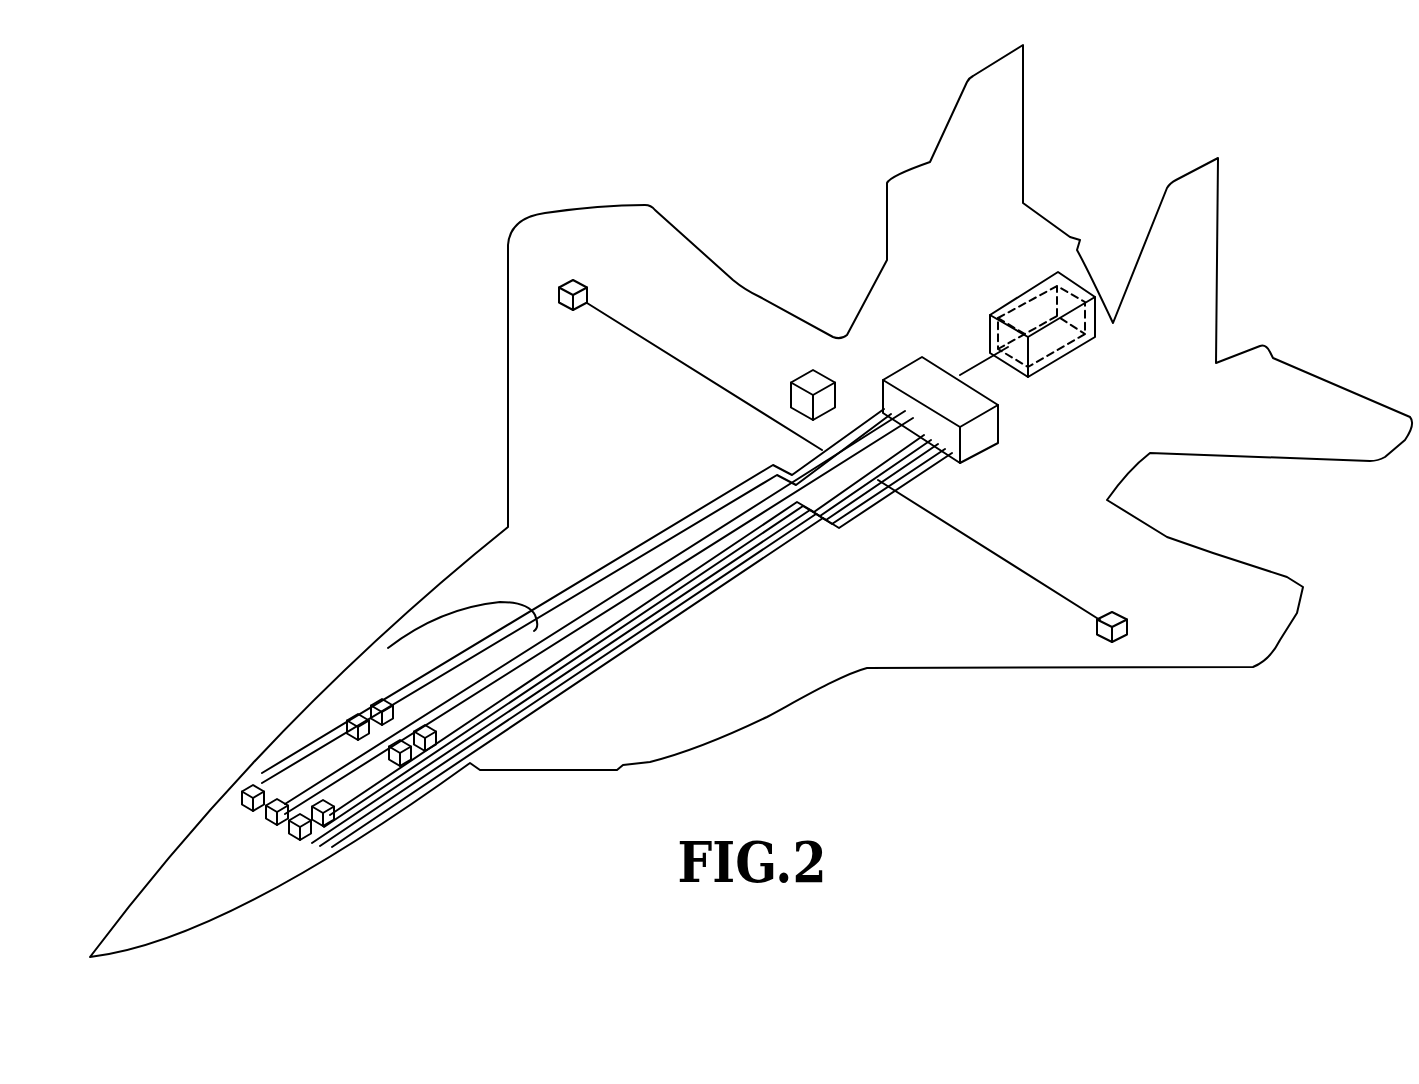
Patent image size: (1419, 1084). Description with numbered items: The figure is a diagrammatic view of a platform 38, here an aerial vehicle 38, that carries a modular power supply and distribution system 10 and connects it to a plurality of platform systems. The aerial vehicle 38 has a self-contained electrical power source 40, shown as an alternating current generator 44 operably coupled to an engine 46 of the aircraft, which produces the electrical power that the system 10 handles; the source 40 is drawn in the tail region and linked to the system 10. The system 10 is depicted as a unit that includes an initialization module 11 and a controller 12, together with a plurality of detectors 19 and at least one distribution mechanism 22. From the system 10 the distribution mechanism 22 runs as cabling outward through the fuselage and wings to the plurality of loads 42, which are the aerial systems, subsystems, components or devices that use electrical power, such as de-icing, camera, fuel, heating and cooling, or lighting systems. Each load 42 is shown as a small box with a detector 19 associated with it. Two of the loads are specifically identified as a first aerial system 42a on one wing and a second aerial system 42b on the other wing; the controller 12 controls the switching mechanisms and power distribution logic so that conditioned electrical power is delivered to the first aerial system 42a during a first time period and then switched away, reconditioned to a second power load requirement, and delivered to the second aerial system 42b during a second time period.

The modular power supply and distribution system 10 is at (698, 436).
The initialization module 11 is at (808, 382).
The controller 12 is at (995, 465).
The detectors 19 is at (365, 715).
The distribution mechanism 22 is at (657, 350).
The platform 38 is at (448, 542).
The self-contained electrical power source 40 is at (1039, 320).
The loads 42 is at (383, 700).
The first aerial system 42a is at (568, 288).
The second aerial system 42b is at (1103, 637).
The alternating current (AC) generator 44 is at (1055, 298).
The engine 46 is at (1018, 318).